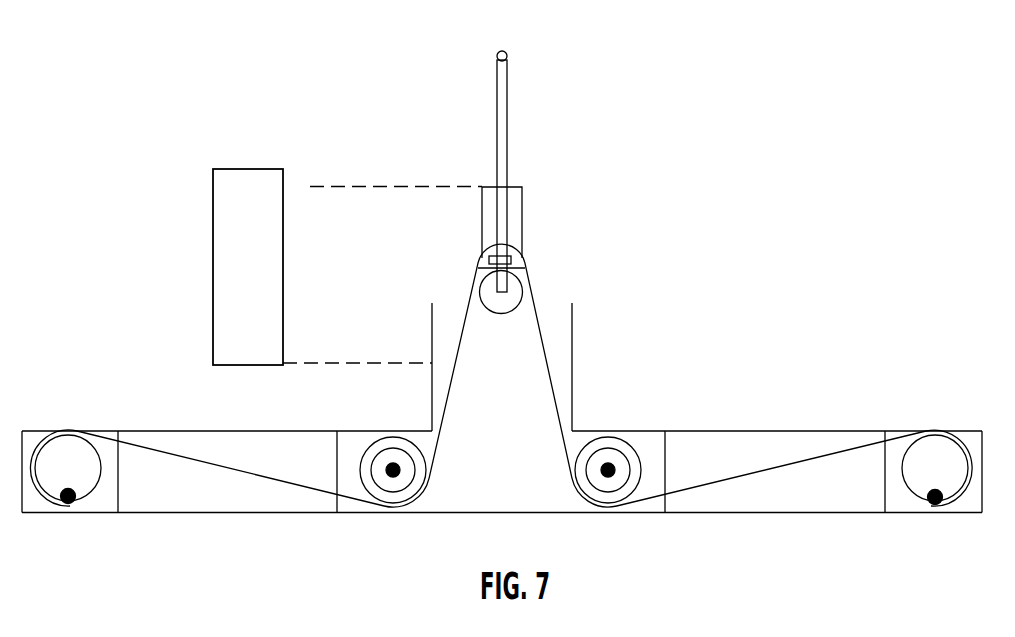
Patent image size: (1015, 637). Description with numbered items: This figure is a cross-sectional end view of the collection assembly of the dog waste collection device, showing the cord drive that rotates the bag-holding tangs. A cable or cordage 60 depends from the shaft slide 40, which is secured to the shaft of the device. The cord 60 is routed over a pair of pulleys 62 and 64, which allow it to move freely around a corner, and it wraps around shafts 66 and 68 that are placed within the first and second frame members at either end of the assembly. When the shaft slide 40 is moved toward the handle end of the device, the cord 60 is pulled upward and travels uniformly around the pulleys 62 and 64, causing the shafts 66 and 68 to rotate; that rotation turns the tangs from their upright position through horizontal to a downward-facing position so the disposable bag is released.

The shaft slide 40 is at (506, 52).
The cable or cordage 60 is at (508, 125).
The pulley 62 is at (606, 443).
The pulley 64 is at (385, 443).
The shaft 66 is at (930, 452).
The shaft 68 is at (63, 450).